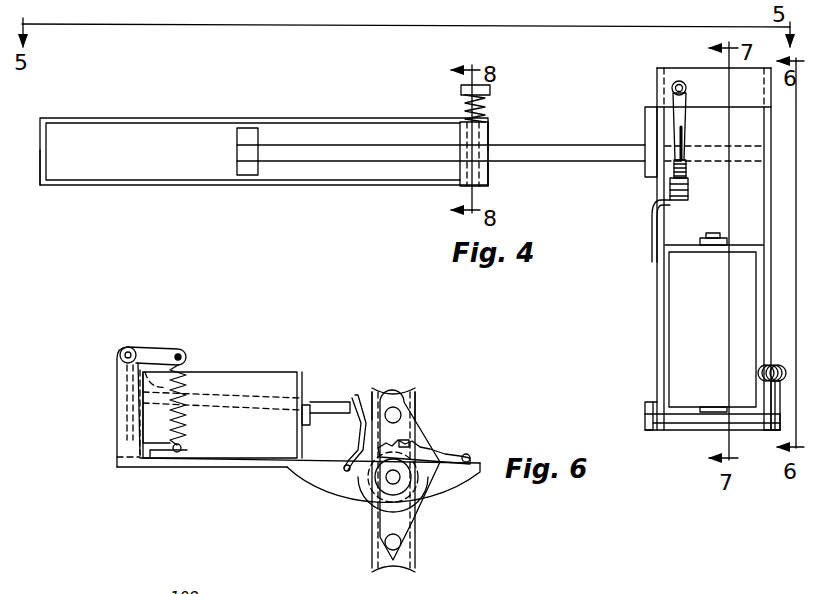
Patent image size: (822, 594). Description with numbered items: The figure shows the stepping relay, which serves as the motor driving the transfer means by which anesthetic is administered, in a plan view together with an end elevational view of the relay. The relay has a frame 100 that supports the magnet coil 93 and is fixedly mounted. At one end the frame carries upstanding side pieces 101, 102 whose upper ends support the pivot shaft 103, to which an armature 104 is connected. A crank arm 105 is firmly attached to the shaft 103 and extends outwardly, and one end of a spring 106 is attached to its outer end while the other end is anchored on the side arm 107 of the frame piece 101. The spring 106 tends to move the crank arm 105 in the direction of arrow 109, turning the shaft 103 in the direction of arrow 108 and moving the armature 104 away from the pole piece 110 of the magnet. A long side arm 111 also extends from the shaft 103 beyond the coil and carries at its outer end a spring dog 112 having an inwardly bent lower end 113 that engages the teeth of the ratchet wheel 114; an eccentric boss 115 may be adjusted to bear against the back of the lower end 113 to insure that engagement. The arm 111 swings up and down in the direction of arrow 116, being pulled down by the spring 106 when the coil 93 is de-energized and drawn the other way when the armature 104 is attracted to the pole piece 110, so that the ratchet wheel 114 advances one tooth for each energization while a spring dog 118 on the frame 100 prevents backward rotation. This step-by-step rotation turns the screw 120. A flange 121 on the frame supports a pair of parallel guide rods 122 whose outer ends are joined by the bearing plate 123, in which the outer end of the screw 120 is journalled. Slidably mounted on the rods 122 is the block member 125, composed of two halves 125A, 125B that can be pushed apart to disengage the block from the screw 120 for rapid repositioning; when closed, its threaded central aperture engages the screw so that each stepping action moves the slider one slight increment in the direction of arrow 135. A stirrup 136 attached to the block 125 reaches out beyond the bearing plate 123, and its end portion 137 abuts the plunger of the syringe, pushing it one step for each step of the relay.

In FIG. 4, the magnet coil 93 is at (676, 292).
In FIG. 6, the magnet coil 93 is at (250, 452).
In FIG. 4, the frame 100 is at (669, 67).
In FIG. 6, the frame 100 is at (304, 481).
In FIG. 4, the side piece 101 is at (773, 434).
In FIG. 6, the side piece 101 is at (124, 446).
In FIG. 4, the side piece 102 is at (645, 412).
In FIG. 4, the pivot shaft 103 is at (670, 422).
In FIG. 6, the pivot shaft 103 is at (119, 356).
In FIG. 6, the armature 104 is at (128, 390).
In FIG. 4, the crank arm 105 is at (768, 410).
In FIG. 6, the crank arm 105 is at (176, 348).
In FIG. 4, the spring 106 is at (764, 368).
In FIG. 6, the spring 106 is at (184, 365).
In FIG. 4, the side arm 107 is at (775, 432).
In FIG. 6, the side arm 107 is at (166, 453).
In FIG. 6, the arrow 108 is at (125, 338).
In FIG. 6, the arrow 109 is at (160, 342).
In FIG. 6, the pole piece 110 is at (130, 418).
In FIG. 4, the long side arm 111 is at (652, 213).
In FIG. 6, the long side arm 111 is at (245, 392).
In FIG. 4, the spring dog 112 is at (670, 190).
In FIG. 6, the spring dog 112 is at (358, 420).
In FIG. 6, the inwardly bent lower end 113 is at (347, 472).
In FIG. 4, the ratchet wheel 114 is at (686, 167).
In FIG. 6, the ratchet wheel 114 is at (406, 445).
In FIG. 6, the eccentric boss 115 is at (350, 475).
In FIG. 6, the arrow 116 is at (284, 388).
In FIG. 4, the spring dog 118 is at (676, 98).
In FIG. 6, the spring dog 118 is at (415, 455).
In FIG. 6, the screw 120 is at (400, 480).
In FIG. 4, the flange 121 is at (647, 110).
In FIG. 6, the flange 121 is at (424, 512).
In FIG. 4, the guide rods 122 is at (560, 152).
In FIG. 6, the guide rods 122 is at (402, 412).
In FIG. 4, the bearing plate 123 is at (247, 133).
In FIG. 4, the block member 125 is at (459, 138).
In FIG. 6, the block member 125 is at (395, 393).
In FIG. 4, the block half 125A is at (487, 130).
In FIG. 6, the block half 125A is at (418, 390).
In FIG. 4, the block half 125B is at (488, 176).
In FIG. 6, the block half 125B is at (374, 393).
In FIG. 4, the arrow 135 is at (302, 205).
In FIG. 4, the stirrup 136 is at (158, 120).
In FIG. 4, the end portion 137 is at (42, 168).